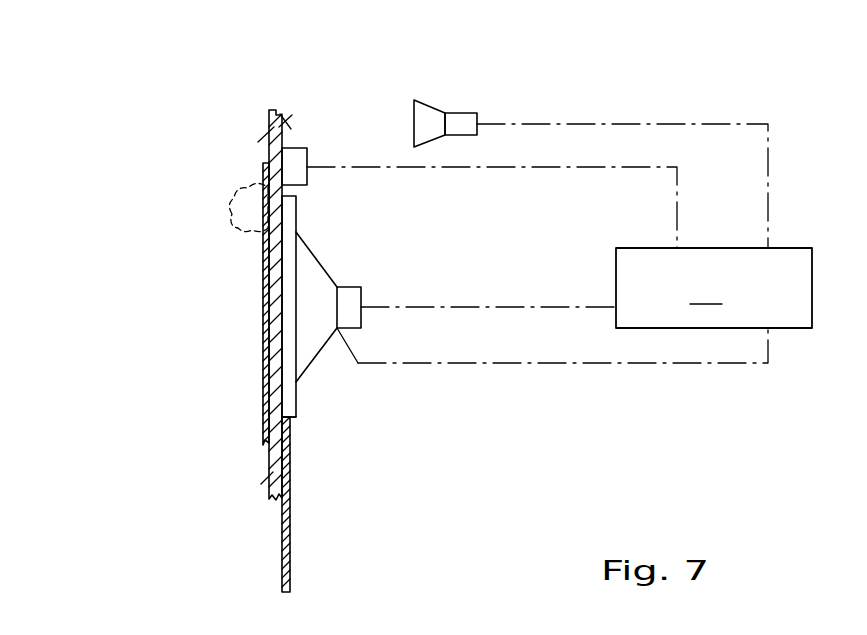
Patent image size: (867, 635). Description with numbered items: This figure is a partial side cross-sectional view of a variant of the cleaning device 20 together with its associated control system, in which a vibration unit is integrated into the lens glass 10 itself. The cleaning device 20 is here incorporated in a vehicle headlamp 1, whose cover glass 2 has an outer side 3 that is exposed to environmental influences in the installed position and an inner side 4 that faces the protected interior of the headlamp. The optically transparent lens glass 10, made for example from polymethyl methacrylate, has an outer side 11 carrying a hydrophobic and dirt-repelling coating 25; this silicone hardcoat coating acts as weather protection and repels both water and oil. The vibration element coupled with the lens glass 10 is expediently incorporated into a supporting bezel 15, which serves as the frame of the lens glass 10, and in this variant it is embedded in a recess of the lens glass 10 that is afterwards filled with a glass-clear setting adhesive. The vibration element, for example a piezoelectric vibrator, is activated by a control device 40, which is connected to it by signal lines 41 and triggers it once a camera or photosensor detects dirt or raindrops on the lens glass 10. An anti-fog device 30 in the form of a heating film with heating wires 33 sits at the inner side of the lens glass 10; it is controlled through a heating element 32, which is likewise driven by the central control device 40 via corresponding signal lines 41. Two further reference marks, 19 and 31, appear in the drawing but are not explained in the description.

The vehicle headlamp 1 is at (130, 331).
The cover glass 2 is at (276, 112).
The outer side 3 is at (268, 130).
The inner side 4 is at (283, 118).
The lens glass 10 is at (227, 381).
The outer side 11 is at (310, 338).
The supporting bezel 15 is at (287, 211).
The gap 19 is at (300, 424).
The cleaning device 20 is at (265, 327).
The dirt-repelling coating 25 is at (247, 212).
The anti-fog device 30 is at (714, 288).
The signal lines 31 is at (525, 305).
The heating element 32 is at (307, 148).
The heating wires 33 is at (428, 105).
The control device 40 is at (290, 577).
The signal lines 41 is at (312, 519).